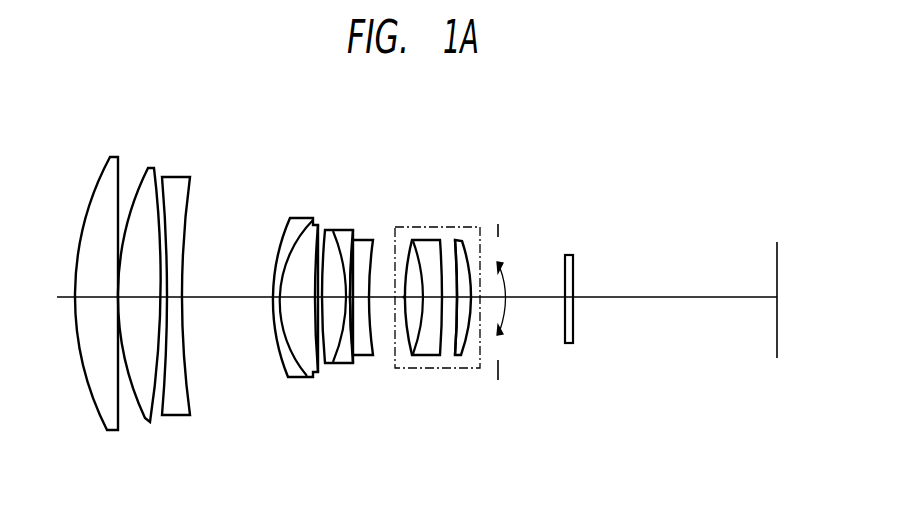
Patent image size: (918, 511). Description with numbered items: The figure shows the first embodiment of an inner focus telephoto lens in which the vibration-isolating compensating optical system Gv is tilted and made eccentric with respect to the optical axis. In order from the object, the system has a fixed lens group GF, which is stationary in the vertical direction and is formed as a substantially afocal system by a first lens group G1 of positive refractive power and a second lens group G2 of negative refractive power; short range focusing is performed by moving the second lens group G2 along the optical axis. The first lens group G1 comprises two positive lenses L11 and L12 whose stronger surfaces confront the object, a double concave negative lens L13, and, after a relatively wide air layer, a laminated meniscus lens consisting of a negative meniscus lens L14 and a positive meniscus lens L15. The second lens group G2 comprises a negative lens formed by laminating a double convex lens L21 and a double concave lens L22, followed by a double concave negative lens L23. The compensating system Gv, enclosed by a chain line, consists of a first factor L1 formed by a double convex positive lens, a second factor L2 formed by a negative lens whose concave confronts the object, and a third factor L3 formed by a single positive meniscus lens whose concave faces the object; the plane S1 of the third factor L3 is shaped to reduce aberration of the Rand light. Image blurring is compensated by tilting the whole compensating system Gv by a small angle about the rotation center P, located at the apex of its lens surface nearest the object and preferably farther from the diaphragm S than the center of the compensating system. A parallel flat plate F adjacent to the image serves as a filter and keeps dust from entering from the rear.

The fixed lens group GF is at (372, 112).
The first lens group G1 is at (320, 148).
The second lens group G2 is at (376, 388).
The vibration-isolating compensating optical system Gv is at (477, 149).
The positive lens L11 is at (107, 431).
The positive lens L12 is at (145, 419).
The double concave negative lens L13 is at (175, 416).
The negative meniscus lens L14 is at (290, 363).
The positive meniscus lens L15 is at (307, 357).
The double convex lens L21 is at (330, 228).
The double concave lens L22 is at (347, 238).
The double concave negative lens L23 is at (365, 243).
The first factor L1 is at (410, 240).
The second factor L2 is at (430, 242).
The third factor L3 is at (455, 240).
The plane S1 is at (452, 352).
The rotation center P is at (403, 299).
The diaphragm S is at (498, 222).
The parallel flat plate F is at (568, 254).